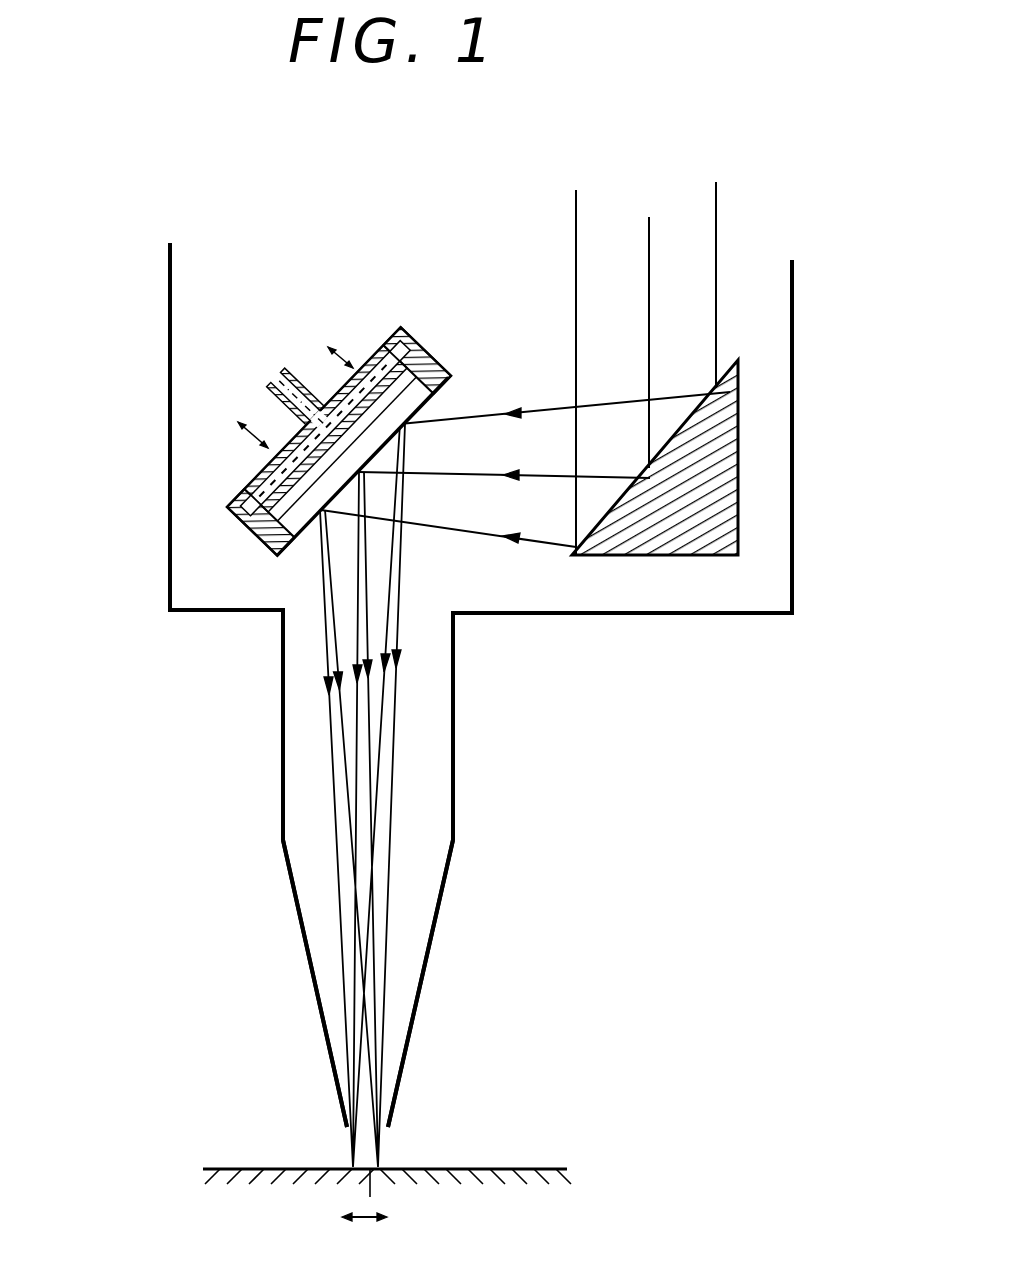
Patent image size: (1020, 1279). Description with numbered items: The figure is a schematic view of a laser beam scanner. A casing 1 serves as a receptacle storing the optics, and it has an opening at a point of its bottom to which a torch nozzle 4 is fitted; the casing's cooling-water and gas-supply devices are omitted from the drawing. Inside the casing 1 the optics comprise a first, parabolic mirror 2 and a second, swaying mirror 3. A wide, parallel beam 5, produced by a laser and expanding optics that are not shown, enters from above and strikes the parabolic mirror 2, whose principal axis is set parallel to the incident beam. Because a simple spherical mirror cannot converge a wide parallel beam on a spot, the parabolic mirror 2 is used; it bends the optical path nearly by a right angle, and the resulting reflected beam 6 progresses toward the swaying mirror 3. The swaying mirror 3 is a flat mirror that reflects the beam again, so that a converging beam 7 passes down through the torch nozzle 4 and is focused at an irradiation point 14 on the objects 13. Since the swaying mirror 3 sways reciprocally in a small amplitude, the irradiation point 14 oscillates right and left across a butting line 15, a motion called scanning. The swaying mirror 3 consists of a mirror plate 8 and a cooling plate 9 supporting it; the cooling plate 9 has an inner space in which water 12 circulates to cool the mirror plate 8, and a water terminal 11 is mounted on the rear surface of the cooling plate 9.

The casing 1 is at (168, 446).
The parabolic mirror 2 is at (675, 522).
The swaying mirror 3 is at (347, 385).
The torch nozzle 4 is at (437, 923).
The wide, parallel beam 5 is at (716, 205).
The reflected beam 6 is at (522, 543).
The converging beam 7 is at (388, 732).
The mirror plate 8 is at (447, 405).
The cooling plate 9 is at (339, 441).
The water terminal 11 is at (301, 401).
The water 12 is at (325, 428).
The objects 13 is at (487, 1169).
The irradiation point 14 is at (377, 1168).
The butting line 15 is at (352, 1167).